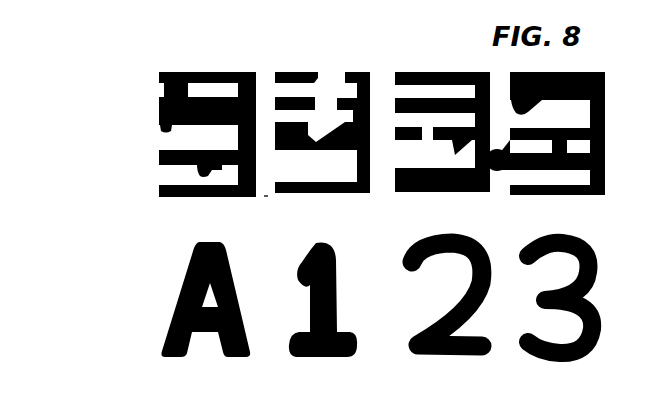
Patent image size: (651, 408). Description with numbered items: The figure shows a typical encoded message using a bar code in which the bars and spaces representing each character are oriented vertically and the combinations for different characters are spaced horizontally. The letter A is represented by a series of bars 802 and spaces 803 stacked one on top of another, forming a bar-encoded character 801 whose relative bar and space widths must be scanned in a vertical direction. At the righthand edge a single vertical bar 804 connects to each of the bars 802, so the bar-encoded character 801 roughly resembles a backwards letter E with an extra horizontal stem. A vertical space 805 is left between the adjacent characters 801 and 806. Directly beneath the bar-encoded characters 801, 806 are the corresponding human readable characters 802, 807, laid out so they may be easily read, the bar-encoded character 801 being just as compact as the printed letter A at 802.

The bar-encoded character 801 is at (199, 131).
The bars 802 is at (319, 215).
The spaces 803 is at (163, 90).
The vertical bar 804 is at (259, 73).
The vertical space 805 is at (268, 196).
The adjacent bar-encoded character 806 is at (352, 197).
The human readable character 807 is at (345, 358).